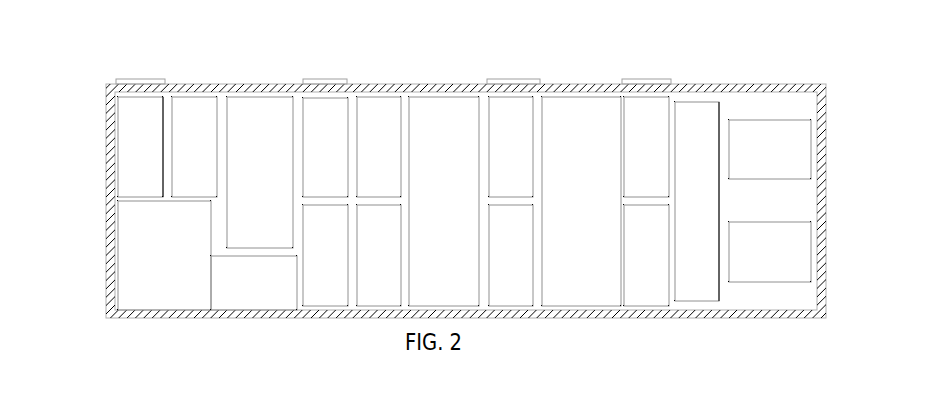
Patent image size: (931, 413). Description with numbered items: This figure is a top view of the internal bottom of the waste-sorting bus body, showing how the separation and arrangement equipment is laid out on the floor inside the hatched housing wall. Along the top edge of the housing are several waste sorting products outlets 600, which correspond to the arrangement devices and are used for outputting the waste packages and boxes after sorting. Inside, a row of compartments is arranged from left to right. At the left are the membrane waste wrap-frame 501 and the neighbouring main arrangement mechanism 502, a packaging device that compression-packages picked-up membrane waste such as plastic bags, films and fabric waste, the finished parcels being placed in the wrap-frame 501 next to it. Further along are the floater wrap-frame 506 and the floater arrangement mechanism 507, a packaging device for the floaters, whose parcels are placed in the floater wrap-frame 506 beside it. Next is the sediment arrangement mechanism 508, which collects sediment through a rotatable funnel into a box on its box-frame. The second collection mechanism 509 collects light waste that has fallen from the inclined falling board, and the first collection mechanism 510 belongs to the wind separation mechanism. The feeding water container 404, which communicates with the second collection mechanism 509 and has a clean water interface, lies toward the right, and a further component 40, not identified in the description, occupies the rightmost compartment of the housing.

The battery module 40 is at (767, 137).
The feeding water container 404 is at (695, 123).
The membrane waste wrap-frame 501 is at (125, 145).
The main arrangement mechanism 502 is at (242, 133).
The floater wrap-frame 506 is at (319, 115).
The floater arrangement mechanism 507 is at (428, 127).
The sediment arrangement mechanism 508 is at (517, 125).
The second collection mechanism 509 is at (580, 123).
The first collection mechanism 510 is at (645, 113).
The waste sorting products outlet 600 is at (143, 79).